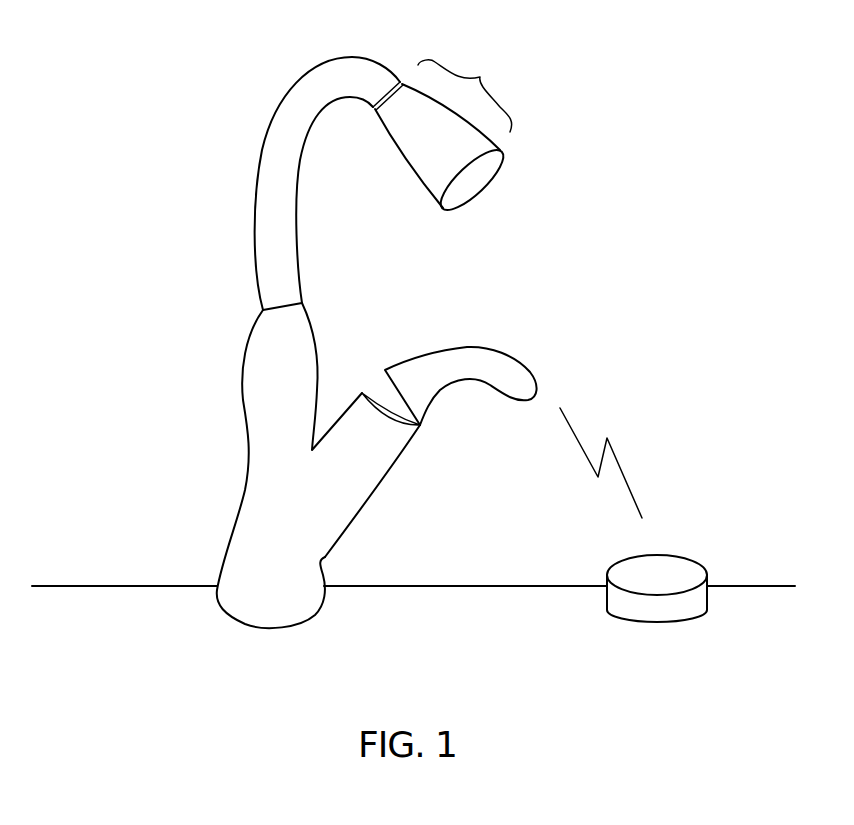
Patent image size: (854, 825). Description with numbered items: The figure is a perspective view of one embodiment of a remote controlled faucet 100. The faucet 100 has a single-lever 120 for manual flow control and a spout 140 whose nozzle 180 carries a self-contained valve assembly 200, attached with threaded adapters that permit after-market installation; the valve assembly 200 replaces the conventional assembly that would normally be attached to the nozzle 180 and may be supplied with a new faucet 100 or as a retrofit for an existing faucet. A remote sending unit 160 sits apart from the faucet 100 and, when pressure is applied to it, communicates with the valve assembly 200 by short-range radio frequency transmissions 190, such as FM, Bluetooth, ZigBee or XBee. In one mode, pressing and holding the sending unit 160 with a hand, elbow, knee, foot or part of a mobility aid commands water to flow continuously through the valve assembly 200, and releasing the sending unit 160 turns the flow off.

The remote controlled faucet 100 is at (728, 145).
The single-lever 120 is at (417, 360).
The spout 140 is at (267, 140).
The remote sending unit 160 is at (682, 573).
The nozzle 180 is at (375, 108).
The short-range radio frequency transmissions 190 is at (576, 441).
The self-contained valve assembly 200 is at (441, 209).